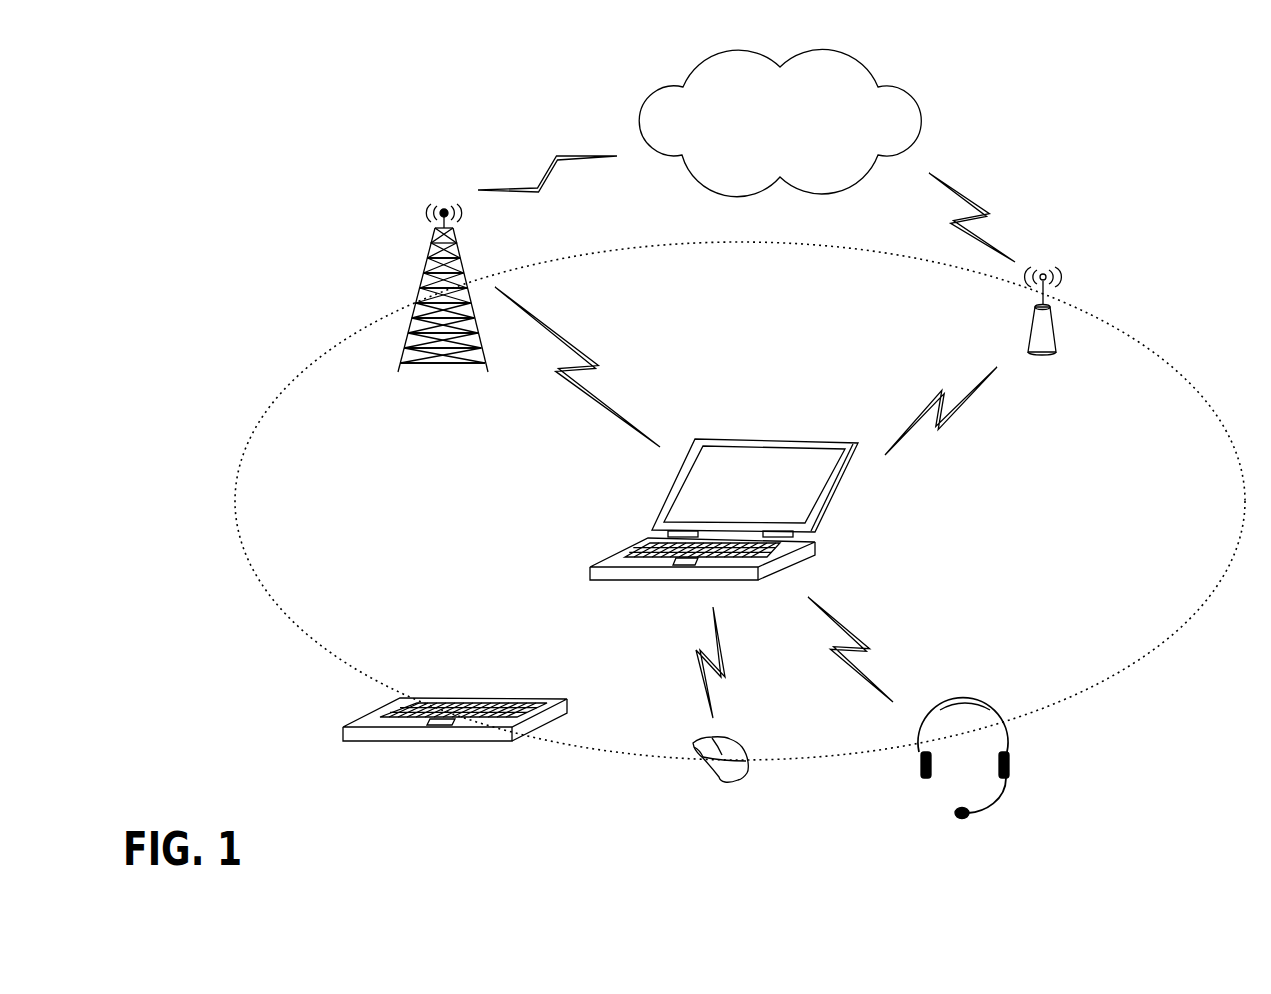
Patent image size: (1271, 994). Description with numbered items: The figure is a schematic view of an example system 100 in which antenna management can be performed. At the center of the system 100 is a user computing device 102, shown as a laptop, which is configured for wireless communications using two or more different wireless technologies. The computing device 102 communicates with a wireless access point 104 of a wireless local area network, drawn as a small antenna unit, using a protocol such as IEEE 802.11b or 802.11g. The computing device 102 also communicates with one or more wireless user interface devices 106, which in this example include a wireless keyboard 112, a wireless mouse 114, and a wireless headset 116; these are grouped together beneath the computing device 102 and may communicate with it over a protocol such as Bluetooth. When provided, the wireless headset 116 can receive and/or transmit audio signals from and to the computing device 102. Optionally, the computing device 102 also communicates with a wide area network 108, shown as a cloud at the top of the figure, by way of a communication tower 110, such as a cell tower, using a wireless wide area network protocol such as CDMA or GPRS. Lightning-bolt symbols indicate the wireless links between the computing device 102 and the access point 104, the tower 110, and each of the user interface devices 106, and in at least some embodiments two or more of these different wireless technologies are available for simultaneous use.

The system 100 is at (230, 148).
The user computing device 102 is at (823, 495).
The wireless access point 104 is at (1048, 340).
The wireless user interface devices 106 is at (1173, 658).
The wide area network 108 is at (761, 160).
The communication tower 110 is at (400, 347).
The wireless keyboard 112 is at (543, 718).
The wireless mouse 114 is at (738, 762).
The wireless headset 116 is at (1008, 733).